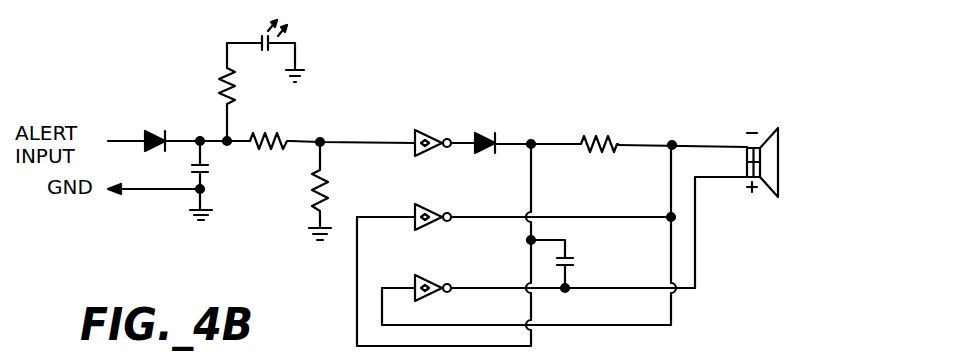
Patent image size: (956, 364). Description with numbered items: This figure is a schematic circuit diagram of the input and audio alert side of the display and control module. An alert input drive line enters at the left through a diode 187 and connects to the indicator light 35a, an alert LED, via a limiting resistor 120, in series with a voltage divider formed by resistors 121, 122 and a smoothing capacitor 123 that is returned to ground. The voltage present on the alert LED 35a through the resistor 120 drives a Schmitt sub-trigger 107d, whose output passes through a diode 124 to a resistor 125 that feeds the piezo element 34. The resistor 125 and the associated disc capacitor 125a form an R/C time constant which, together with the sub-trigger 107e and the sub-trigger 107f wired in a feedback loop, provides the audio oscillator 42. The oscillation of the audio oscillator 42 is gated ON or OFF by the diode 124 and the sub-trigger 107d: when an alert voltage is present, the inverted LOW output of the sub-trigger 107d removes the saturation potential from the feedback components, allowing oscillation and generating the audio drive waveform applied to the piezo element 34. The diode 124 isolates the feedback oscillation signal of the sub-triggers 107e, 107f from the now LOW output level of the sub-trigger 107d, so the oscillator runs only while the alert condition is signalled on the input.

The indicator light 35a is at (261, 39).
The limiting resistor 120 is at (222, 93).
The diode 187 is at (170, 136).
The smoothing capacitor 123 is at (208, 167).
The resistor 122 is at (274, 135).
The resistor 121 is at (314, 205).
The sub-trigger 107d is at (428, 133).
The sub-trigger 107e is at (428, 207).
The sub-trigger 107f is at (433, 279).
The diode 124 is at (489, 134).
The resistor 125 is at (592, 135).
The disc capacitor 125a is at (569, 264).
The piezo element 34 is at (768, 190).
The audio oscillator 42 is at (660, 254).